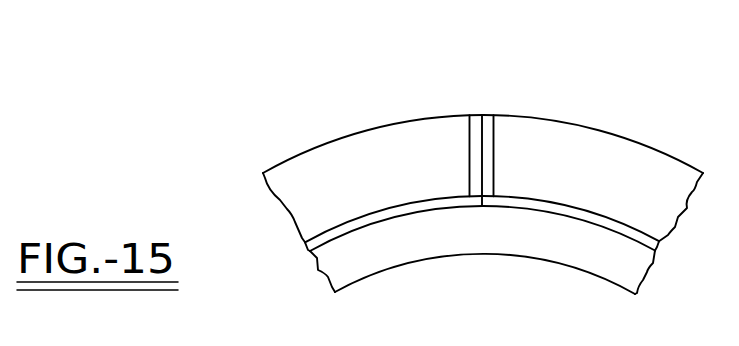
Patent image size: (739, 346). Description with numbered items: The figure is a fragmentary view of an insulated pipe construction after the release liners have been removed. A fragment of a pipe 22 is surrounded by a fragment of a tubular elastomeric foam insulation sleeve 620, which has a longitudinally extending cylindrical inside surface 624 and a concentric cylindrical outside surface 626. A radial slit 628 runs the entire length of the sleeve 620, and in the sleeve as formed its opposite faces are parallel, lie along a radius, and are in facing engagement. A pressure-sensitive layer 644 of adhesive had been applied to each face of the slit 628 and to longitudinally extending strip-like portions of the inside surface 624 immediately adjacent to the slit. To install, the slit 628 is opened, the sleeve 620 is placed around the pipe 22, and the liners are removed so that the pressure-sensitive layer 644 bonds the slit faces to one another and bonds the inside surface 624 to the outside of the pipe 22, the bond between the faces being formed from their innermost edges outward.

The pipe 22 is at (468, 243).
The insulation sleeve 620 is at (434, 126).
The inside surface 624 is at (347, 222).
The outside surface 626 is at (287, 160).
The radial slit 628 is at (483, 103).
The pressure-sensitive layer 644 is at (470, 137).